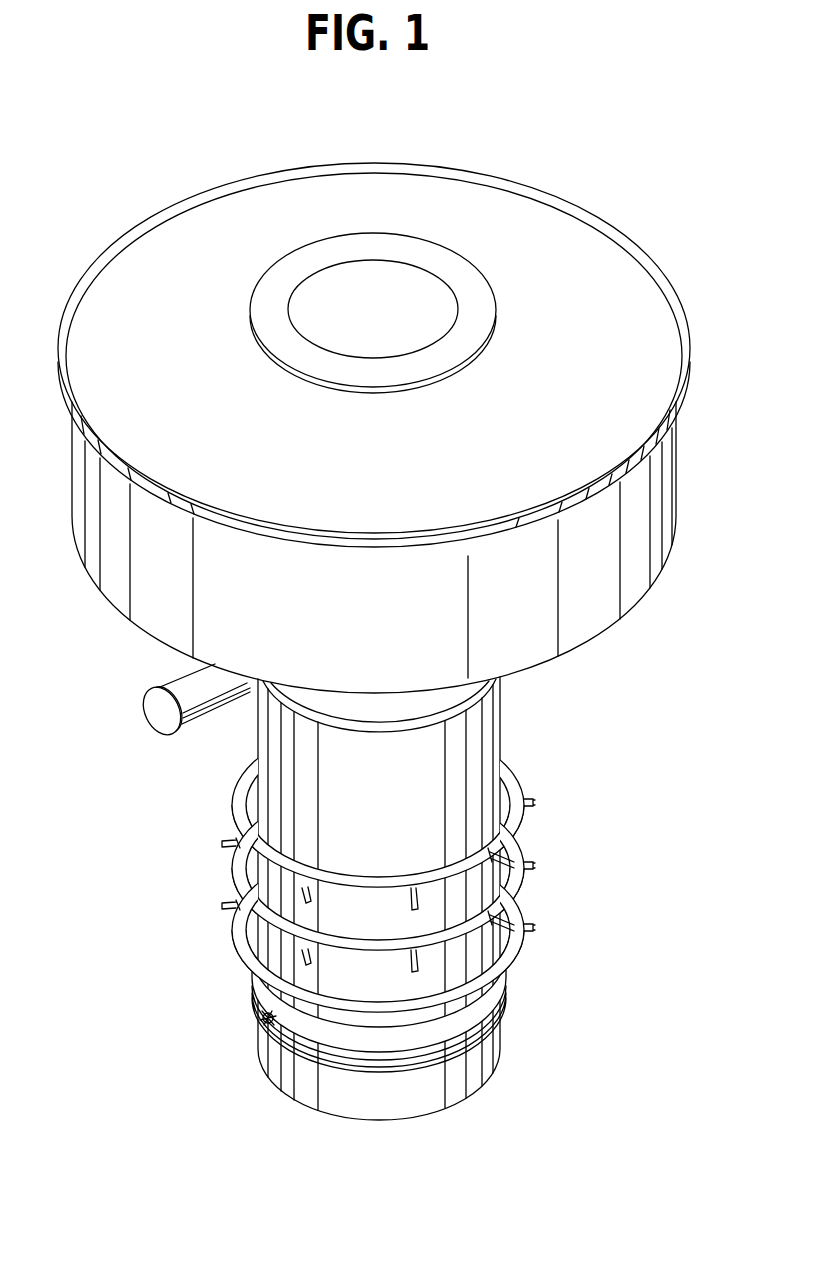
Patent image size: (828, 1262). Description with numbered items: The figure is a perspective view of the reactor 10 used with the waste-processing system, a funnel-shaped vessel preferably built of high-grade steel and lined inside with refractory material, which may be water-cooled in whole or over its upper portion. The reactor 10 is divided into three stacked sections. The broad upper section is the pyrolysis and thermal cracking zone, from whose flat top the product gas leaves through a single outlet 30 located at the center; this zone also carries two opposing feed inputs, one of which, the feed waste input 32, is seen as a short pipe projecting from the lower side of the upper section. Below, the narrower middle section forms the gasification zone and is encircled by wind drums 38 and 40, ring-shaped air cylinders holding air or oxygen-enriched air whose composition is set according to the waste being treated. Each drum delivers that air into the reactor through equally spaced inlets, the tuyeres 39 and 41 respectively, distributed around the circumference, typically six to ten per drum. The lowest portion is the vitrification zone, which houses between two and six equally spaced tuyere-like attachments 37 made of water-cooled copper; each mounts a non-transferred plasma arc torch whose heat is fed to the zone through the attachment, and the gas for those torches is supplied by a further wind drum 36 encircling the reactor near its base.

The reactor 10 is at (617, 231).
The outlet 30 is at (403, 297).
The feed waste input 32 is at (160, 718).
The wind drum 36 is at (524, 948).
The tuyere-like attachment 37 is at (262, 1016).
The wind drum 38 is at (521, 893).
The tuyere 39 is at (232, 908).
The wind drum 40 is at (520, 778).
The tuyere 41 is at (222, 843).